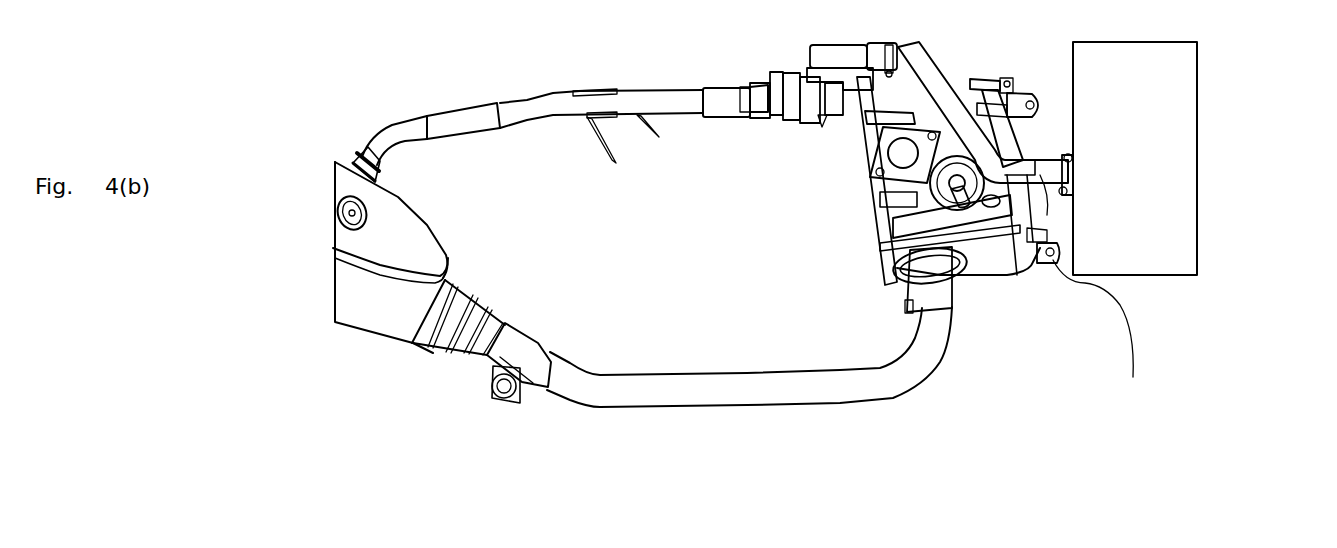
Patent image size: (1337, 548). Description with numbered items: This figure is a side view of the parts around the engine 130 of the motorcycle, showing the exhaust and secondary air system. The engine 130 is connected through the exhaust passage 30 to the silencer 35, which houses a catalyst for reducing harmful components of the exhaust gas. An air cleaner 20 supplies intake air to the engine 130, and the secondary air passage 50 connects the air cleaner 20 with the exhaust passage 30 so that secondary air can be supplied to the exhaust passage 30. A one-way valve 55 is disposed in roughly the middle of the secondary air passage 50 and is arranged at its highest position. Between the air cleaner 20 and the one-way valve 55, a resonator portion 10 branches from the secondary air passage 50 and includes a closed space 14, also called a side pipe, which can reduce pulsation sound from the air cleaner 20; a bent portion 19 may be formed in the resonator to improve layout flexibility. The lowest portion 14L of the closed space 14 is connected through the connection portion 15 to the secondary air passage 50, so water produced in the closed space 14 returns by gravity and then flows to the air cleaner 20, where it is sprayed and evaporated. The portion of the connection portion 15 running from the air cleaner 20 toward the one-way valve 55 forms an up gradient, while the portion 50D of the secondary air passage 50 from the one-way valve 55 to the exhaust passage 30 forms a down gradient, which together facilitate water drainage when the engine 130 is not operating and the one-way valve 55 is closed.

The resonator portion 10 is at (947, 78).
The closed space 14 is at (923, 73).
The lowest portion 14L is at (1060, 263).
The connection portion 15 is at (1020, 93).
The bent portion 19 is at (908, 43).
The air cleaner 20 is at (1175, 90).
The exhaust passage 30 is at (772, 395).
The silencer 35 is at (378, 325).
The secondary air passage 50 is at (668, 115).
The portion of the secondary air passage 50D is at (528, 105).
The one-way valve 55 is at (818, 70).
The engine 130 is at (868, 196).